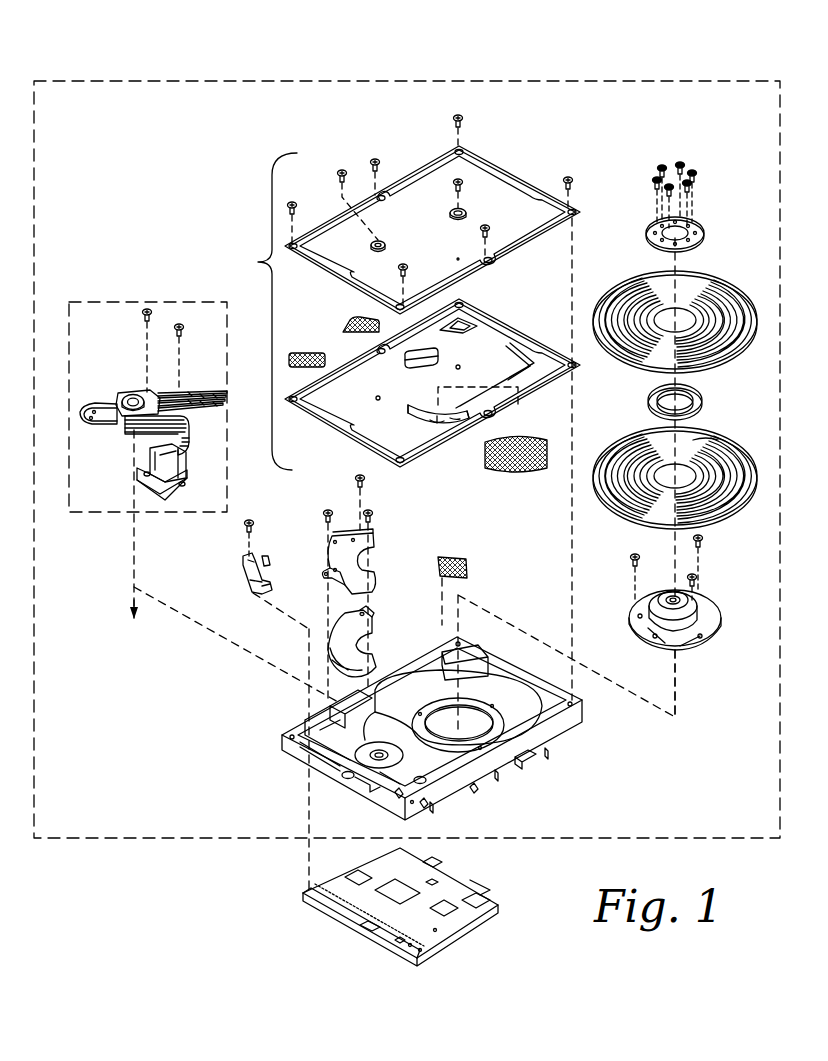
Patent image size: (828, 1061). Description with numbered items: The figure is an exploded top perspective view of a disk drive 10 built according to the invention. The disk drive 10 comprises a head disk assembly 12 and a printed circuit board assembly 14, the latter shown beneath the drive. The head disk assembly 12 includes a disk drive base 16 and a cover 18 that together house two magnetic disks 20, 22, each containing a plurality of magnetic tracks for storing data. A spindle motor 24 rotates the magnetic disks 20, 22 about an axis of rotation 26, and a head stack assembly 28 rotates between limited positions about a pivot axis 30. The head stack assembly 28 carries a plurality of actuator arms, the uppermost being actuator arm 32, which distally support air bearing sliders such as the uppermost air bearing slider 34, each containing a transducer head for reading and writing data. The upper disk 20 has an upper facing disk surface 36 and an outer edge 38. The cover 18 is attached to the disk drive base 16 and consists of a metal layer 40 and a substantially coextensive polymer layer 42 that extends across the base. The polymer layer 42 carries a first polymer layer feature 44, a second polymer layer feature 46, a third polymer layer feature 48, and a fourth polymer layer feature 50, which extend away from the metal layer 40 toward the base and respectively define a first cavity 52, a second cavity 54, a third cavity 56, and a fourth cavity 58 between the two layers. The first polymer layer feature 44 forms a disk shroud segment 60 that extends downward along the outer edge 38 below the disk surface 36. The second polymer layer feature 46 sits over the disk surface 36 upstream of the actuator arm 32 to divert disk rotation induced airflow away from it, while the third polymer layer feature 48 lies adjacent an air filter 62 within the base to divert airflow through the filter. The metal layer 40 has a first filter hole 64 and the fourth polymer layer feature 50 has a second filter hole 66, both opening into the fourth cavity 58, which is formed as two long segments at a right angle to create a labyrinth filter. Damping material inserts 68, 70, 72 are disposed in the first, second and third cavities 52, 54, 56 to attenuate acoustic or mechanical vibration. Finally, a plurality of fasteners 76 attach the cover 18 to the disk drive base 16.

The disk drive 10 is at (222, 60).
The head disk assembly 12 is at (165, 838).
The printed circuit board assembly 14 is at (498, 915).
The disk drive base 16 is at (542, 752).
The cover 18 is at (270, 153).
The magnetic disk 20 is at (620, 290).
The magnetic disk 22 is at (618, 452).
The spindle motor 24 is at (700, 612).
The axis of rotation 26 is at (683, 689).
The head stack assembly 28 is at (176, 302).
The pivot axis 30 is at (134, 540).
The actuator arm 32 is at (180, 393).
The air bearing slider 34 is at (218, 397).
The disk surface 36 is at (701, 439).
The outer edge 38 is at (730, 508).
The metal layer 40 is at (432, 230).
The polymer layer 42 is at (432, 387).
The first polymer layer feature 44 is at (407, 414).
The second polymer layer feature 46 is at (433, 353).
The third polymer layer feature 48 is at (463, 318).
The fourth polymer layer feature 50 is at (512, 376).
The first cavity 52 is at (432, 423).
The second cavity 54 is at (416, 370).
The third cavity 56 is at (478, 324).
The fourth cavity 58 is at (527, 375).
The disk shroud segment 60 is at (457, 418).
The air filter 62 is at (466, 559).
The first filter hole 64 is at (457, 256).
The second filter hole 66 is at (515, 343).
The damping material insert 68 is at (500, 472).
The damping material insert 70 is at (305, 354).
The damping material insert 72 is at (350, 319).
The fasteners 76 is at (462, 116).